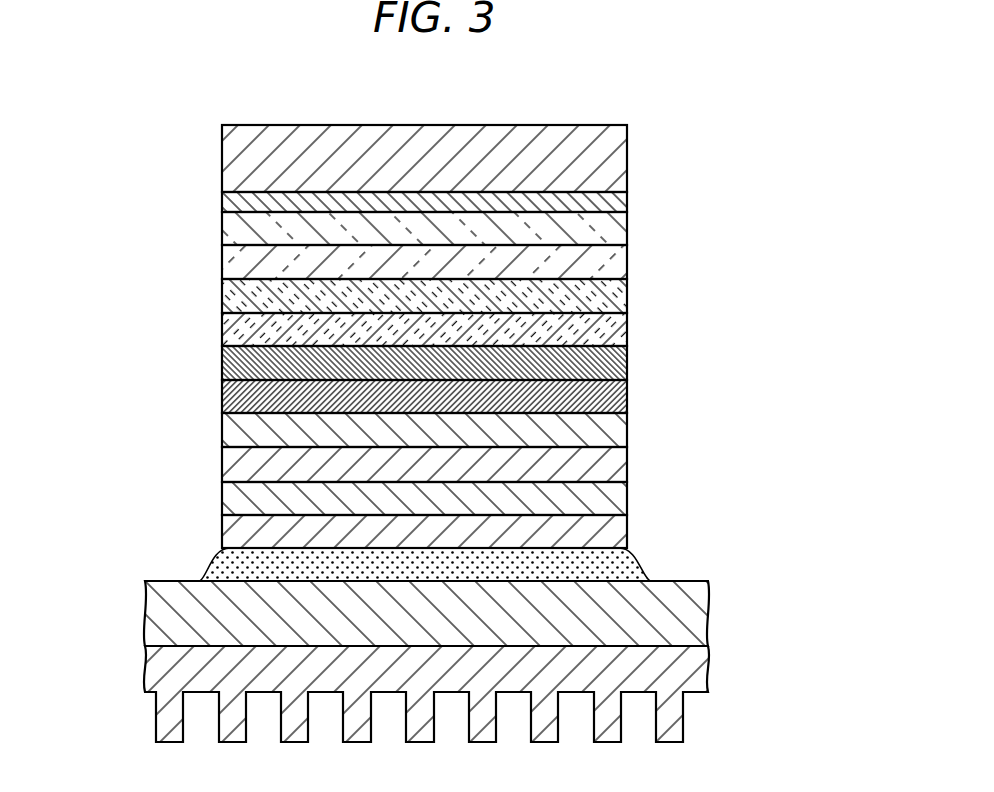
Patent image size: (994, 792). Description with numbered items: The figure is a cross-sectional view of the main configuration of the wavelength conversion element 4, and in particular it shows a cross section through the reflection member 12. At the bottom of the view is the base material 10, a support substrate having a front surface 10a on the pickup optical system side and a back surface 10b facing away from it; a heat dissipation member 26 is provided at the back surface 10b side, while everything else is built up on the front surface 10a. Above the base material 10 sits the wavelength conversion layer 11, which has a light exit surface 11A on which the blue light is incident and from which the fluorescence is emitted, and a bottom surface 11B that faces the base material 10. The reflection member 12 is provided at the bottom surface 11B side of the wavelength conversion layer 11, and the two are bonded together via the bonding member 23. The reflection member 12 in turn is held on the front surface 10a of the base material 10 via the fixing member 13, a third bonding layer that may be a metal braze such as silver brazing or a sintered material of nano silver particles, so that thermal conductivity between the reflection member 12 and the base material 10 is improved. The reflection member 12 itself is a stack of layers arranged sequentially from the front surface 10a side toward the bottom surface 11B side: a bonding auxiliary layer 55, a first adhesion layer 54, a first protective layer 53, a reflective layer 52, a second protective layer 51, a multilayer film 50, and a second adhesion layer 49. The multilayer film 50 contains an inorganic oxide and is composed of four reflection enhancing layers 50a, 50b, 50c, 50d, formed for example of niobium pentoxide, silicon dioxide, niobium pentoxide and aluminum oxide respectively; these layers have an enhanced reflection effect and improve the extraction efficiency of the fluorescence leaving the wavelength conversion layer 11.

The wavelength conversion element 4 is at (627, 99).
The base material 10 is at (178, 617).
The front surface 10a is at (180, 581).
The back surface 10b is at (178, 648).
The wavelength conversion layer 11 is at (612, 158).
The light exit surface 11A is at (242, 125).
The bottom surface 11B is at (237, 205).
The reflection member 12 is at (512, 356).
The fixing member 13 is at (632, 570).
The bonding member 23 is at (612, 205).
The heat dissipation member 26 is at (673, 710).
The second adhesion layer 49 is at (612, 232).
The multilayer film 50 is at (486, 311).
The reflection enhancing layer 50a is at (612, 263).
The reflection enhancing layer 50b is at (612, 296).
The reflection enhancing layer 50c is at (612, 331).
The reflection enhancing layer 50d is at (461, 360).
The second protective layer 51 is at (612, 398).
The reflective layer 52 is at (612, 431).
The first protective layer 53 is at (612, 465).
The first adhesion layer 54 is at (612, 499).
The bonding auxiliary layer 55 is at (484, 530).